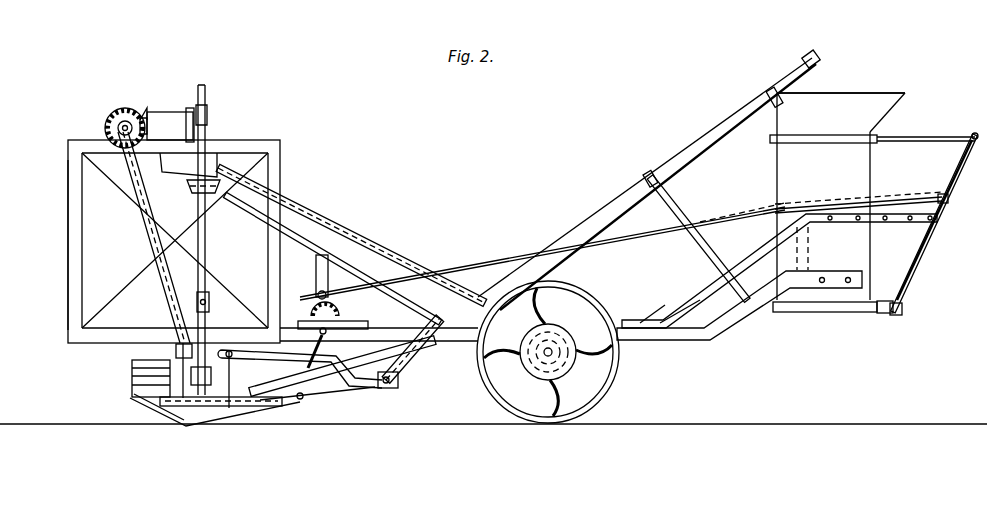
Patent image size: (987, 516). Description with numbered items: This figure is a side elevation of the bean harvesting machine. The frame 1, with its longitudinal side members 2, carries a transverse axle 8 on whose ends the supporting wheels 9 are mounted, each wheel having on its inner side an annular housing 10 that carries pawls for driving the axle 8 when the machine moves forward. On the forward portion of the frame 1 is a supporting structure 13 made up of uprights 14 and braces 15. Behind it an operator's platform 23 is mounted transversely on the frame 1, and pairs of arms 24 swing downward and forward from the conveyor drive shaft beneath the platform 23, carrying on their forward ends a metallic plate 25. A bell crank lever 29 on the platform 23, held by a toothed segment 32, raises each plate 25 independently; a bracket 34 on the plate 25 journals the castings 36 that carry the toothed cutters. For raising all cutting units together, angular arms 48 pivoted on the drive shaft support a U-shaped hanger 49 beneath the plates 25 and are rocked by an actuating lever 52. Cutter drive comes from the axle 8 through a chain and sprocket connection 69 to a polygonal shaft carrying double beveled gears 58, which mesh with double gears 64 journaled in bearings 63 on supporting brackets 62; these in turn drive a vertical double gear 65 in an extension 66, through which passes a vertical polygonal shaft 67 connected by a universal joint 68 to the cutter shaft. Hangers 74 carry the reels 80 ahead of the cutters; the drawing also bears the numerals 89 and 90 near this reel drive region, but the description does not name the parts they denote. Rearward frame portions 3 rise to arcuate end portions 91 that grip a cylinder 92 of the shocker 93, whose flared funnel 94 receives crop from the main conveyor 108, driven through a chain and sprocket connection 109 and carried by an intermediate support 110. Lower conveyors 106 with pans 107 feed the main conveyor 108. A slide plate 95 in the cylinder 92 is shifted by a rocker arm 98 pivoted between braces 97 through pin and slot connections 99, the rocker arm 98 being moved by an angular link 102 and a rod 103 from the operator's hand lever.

The frame 1 is at (712, 340).
The side members 2 is at (652, 340).
The portions of the frame 3 is at (772, 322).
The axle 8 is at (546, 352).
The supporting wheels 9 is at (580, 412).
The annular housing 10 is at (546, 356).
The supporting structure 13 is at (66, 252).
The uprights 14 is at (281, 170).
The braces 15 is at (95, 258).
The operator's platform 23 is at (340, 312).
The arms 24 is at (363, 398).
The metallic plate 25 is at (303, 400).
The bell crank lever 29 is at (367, 249).
The toothed segment 32 is at (405, 268).
The bracket 34 is at (205, 405).
The castings 36 is at (175, 406).
The angular arms 48 is at (332, 380).
The hanger 49 is at (230, 410).
The actuating lever 52 is at (325, 238).
The double beveled gears 58 is at (112, 112).
The supporting brackets 62 is at (105, 150).
The bearings 63 is at (163, 112).
The double beveled gears 64 is at (201, 85).
The double beveled gear 65 is at (220, 172).
The extension 66 is at (185, 168).
The polygonal shaft 67 is at (208, 120).
The universal joint 68 is at (210, 300).
The chain and sprocket connection 69 is at (308, 213).
The hangers 74 is at (176, 351).
The reel 80 is at (132, 372).
The chain 89 is at (178, 302).
The pivot 90 is at (974, 134).
The arcuate end portions 91 is at (847, 313).
The cylinder 92 is at (775, 158).
The shocker 93 is at (893, 82).
The flared mouth or funnel 94 is at (832, 110).
The slide plate 95 is at (912, 137).
The braces 97 is at (665, 300).
The rocker arm 98 is at (918, 262).
The pin and slot connections 99 is at (904, 310).
The angular link 102 is at (905, 195).
The rod 103 is at (495, 260).
The lower conveyors or elevators 106 is at (290, 402).
The pans 107 is at (142, 410).
The main conveyor or elevator 108 is at (678, 148).
The chain and sprocket connection 109 is at (432, 372).
The intermediate support 110 is at (690, 215).